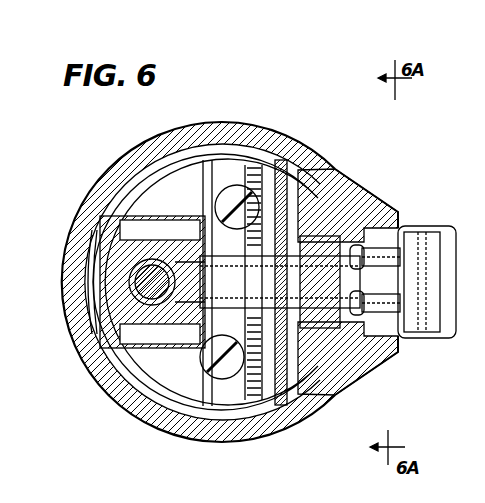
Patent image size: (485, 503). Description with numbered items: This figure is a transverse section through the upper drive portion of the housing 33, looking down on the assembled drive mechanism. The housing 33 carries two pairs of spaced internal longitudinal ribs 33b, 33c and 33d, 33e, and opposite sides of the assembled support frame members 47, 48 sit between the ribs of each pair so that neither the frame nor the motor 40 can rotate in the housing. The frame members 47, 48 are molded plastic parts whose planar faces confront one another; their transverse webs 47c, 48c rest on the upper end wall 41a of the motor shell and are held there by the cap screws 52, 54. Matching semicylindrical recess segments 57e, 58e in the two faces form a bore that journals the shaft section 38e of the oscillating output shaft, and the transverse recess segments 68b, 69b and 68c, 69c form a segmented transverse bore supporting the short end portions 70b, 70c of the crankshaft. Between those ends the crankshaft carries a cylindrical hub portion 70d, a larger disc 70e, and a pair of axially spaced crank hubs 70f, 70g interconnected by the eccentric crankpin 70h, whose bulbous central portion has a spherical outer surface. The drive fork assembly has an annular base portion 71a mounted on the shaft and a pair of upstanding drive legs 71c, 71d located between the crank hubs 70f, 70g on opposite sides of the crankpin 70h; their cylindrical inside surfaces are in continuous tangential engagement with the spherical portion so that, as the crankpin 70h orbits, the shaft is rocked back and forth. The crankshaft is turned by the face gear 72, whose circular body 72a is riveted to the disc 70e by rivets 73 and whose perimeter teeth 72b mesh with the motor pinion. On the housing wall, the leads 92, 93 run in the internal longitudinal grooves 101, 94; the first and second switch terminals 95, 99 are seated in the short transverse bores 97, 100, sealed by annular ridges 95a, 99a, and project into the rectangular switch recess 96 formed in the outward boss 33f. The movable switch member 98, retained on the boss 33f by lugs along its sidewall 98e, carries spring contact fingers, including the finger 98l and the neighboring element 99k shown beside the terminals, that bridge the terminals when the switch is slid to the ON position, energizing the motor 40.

The housing 33 is at (100, 396).
The longitudinal rib 33b is at (90, 362).
The longitudinal rib 33c is at (105, 186).
The longitudinal rib 33d is at (308, 388).
The longitudinal rib 33e is at (320, 178).
The boss 33f is at (423, 213).
The shaft section 38e is at (107, 263).
The electric motor 40 is at (166, 142).
The upper end wall 41a is at (131, 183).
The support frame member 47 is at (90, 318).
The web 47c is at (197, 437).
The support frame member 48 is at (96, 232).
The web 48c is at (226, 135).
The cap screw 52 is at (192, 432).
The cap screw 54 is at (205, 190).
The semicylindrical recess segment 57e is at (95, 300).
The semicylindrical recess segment 58e is at (95, 243).
The recess segment 68b is at (285, 405).
The recess segment 68c is at (185, 330).
The recess segment 69b is at (304, 178).
The recess segment 69c is at (183, 218).
The end portion 70b is at (330, 200).
The end portion 70c is at (110, 280).
The hub portion 70d is at (284, 420).
The disc 70e is at (240, 425).
The crank hub 70f is at (265, 150).
The crank hub 70g is at (189, 200).
The crankpin 70h is at (200, 340).
The annular base portion 71a is at (95, 355).
The drive leg 71c is at (160, 422).
The drive leg 71d is at (182, 140).
The face gear 72 is at (275, 155).
The circular body 72a is at (300, 170).
The teeth 72b is at (279, 152).
The rivets 73 is at (290, 150).
The lead 92 is at (345, 215).
The lead 93 is at (370, 345).
The longitudinal groove 94 is at (381, 345).
The first switch terminal 95 is at (430, 290).
The annular ridge 95a is at (410, 345).
The switch recess 96 is at (425, 272).
The transverse bore 97 is at (395, 345).
The switch member 98 is at (462, 222).
The sidewall 98e is at (433, 227).
The spring contact finger 98l is at (413, 340).
The second switch terminal 99 is at (440, 246).
The annular ridge 99a is at (400, 222).
The rod portion 99k is at (407, 228).
The transverse bore 100 is at (368, 225).
The longitudinal groove 101 is at (362, 230).